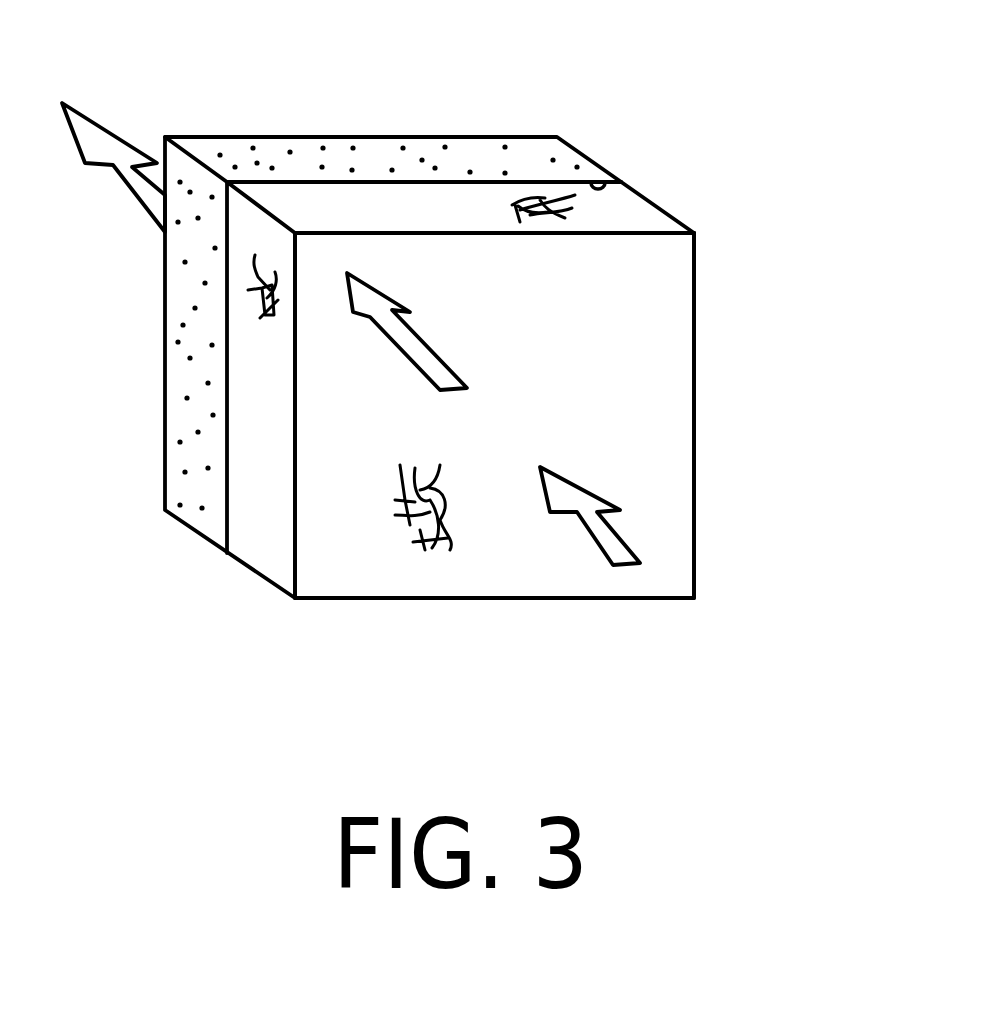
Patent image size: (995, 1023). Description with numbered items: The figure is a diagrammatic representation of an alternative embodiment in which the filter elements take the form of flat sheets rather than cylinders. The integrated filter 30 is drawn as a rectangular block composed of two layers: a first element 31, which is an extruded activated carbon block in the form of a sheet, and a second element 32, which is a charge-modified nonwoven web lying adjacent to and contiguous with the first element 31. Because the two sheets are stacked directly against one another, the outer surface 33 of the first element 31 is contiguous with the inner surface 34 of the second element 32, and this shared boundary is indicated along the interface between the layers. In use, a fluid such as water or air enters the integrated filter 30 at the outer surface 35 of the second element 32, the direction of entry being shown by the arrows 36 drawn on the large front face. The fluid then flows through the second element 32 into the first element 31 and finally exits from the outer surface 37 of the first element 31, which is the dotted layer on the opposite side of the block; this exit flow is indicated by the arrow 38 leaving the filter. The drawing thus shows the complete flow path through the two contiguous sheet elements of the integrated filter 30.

The integrated filter 30 is at (748, 412).
The first element 31 is at (522, 150).
The second element 32 is at (620, 213).
The outer surface of the first element 33 is at (615, 180).
The inner surface of the second element 34 is at (495, 175).
The outer surface of the second element 35 is at (642, 307).
The arrows 36 is at (430, 363).
The outer surface of the first element 37 is at (322, 133).
The arrow 38 is at (97, 147).